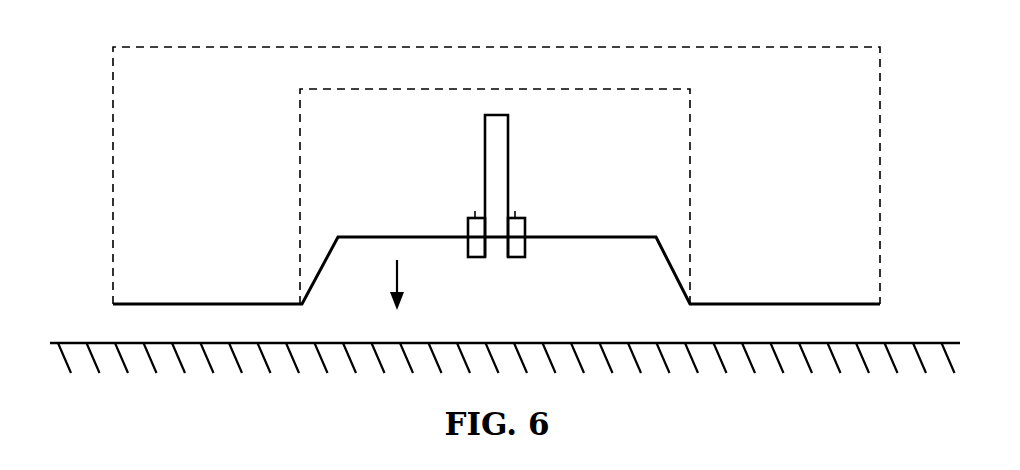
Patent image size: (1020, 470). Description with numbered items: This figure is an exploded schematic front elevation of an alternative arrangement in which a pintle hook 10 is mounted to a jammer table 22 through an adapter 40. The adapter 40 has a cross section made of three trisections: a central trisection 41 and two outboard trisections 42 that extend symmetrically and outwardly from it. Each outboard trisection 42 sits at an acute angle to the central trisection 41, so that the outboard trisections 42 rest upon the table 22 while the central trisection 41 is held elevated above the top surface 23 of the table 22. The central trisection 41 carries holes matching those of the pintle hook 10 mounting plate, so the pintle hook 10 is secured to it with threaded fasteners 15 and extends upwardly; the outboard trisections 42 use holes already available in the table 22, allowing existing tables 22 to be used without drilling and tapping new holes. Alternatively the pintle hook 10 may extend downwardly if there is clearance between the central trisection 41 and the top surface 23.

The pintle hook 10 is at (496, 145).
The threaded fasteners 15 is at (473, 230).
The table 22 is at (97, 345).
The top surface 23 is at (78, 343).
The adapter 40 is at (482, 47).
The central trisection 41 is at (482, 89).
The outboard trisections 42 is at (299, 252).